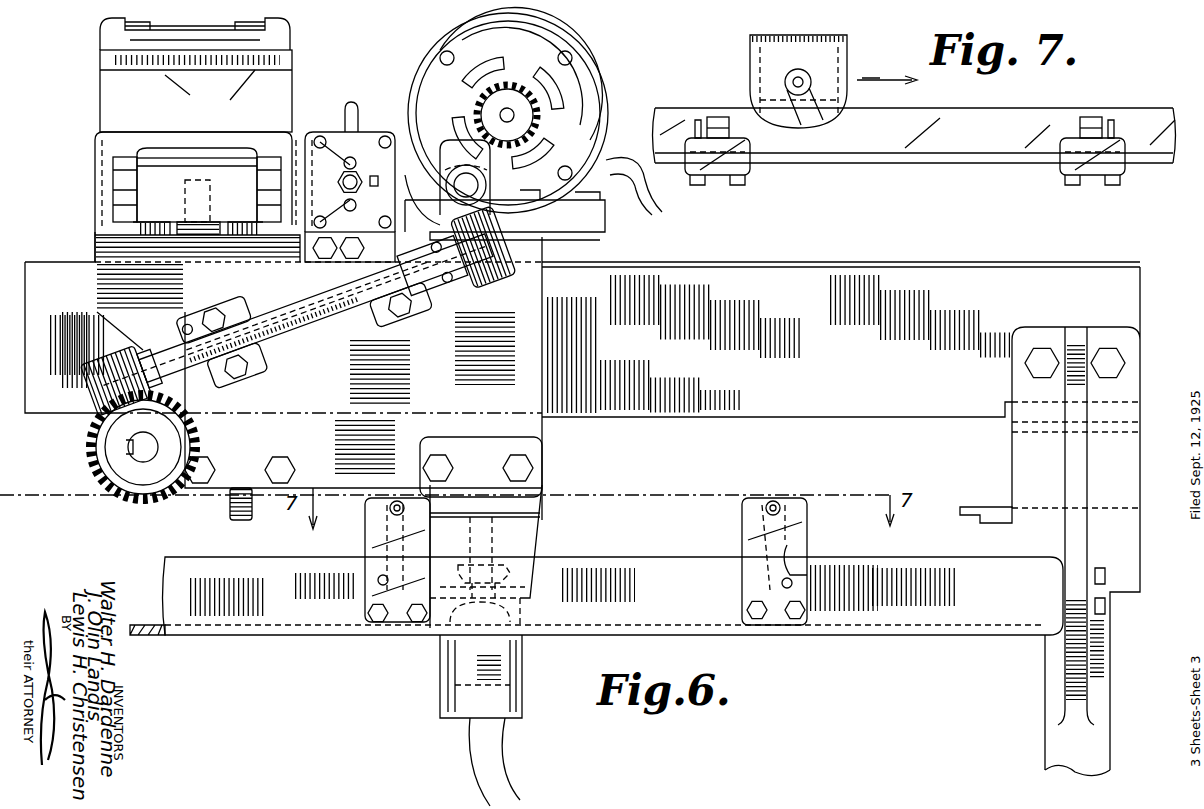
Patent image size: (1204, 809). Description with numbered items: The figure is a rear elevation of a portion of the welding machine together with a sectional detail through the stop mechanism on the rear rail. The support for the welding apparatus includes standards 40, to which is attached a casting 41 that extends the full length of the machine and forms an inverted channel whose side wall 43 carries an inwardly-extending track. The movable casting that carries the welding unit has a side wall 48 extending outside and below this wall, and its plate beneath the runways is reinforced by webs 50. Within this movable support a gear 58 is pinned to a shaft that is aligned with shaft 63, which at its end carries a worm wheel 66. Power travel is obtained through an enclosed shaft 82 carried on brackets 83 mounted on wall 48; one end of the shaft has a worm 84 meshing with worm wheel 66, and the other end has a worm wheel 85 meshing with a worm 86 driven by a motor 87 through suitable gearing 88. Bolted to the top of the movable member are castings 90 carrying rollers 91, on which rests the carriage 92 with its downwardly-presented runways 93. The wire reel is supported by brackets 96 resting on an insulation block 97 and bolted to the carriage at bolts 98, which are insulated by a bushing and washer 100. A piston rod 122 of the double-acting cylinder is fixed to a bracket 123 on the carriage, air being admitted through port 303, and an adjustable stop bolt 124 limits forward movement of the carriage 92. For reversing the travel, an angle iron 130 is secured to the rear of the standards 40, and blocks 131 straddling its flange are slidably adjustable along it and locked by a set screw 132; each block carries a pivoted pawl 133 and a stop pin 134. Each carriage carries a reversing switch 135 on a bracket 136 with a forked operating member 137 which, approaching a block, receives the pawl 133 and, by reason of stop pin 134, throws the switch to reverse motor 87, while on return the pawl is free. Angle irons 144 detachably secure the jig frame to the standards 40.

In FIG. 6, the standards 40 is at (1045, 705).
In FIG. 6, the casting 41 is at (60, 285).
In FIG. 6, the side wall 43 is at (935, 360).
In FIG. 6, the side wall 48 is at (202, 370).
In FIG. 6, the webs 50 is at (248, 520).
In FIG. 6, the gear 58 is at (100, 473).
In FIG. 6, the shaft 63 is at (143, 450).
In FIG. 6, the worm wheel 66 is at (95, 452).
In FIG. 6, the enclosed shaft 82 is at (305, 320).
In FIG. 6, the brackets 83 is at (240, 375).
In FIG. 6, the worm 84 is at (100, 392).
In FIG. 6, the worm wheel 85 is at (508, 280).
In FIG. 6, the worm 86 is at (447, 188).
In FIG. 6, the motor 87 is at (565, 92).
In FIG. 6, the gearing 88 is at (480, 110).
In FIG. 6, the castings 90 is at (197, 185).
In FIG. 6, the rollers 91 is at (122, 174).
In FIG. 6, the carriage 92 is at (270, 90).
In FIG. 6, the runways 93 is at (135, 155).
In FIG. 6, the brackets 96 is at (105, 35).
In FIG. 6, the insulation block 97 is at (108, 60).
In FIG. 6, the bolts 98 is at (195, 17).
In FIG. 6, the washer 100 is at (195, 42).
In FIG. 6, the piston rod 122 is at (350, 195).
In FIG. 6, the bracket 123 is at (305, 140).
In FIG. 6, the adjustable stop bolt 124 is at (328, 247).
In FIG. 6, the angle iron 130 is at (950, 637).
In FIG. 7, the angle iron 130 is at (975, 150).
In FIG. 6, the blocks 131 is at (365, 568).
In FIG. 7, the blocks 131 is at (752, 168).
In FIG. 6, the set screw 132 is at (415, 620).
In FIG. 7, the set screw 132 is at (740, 188).
In FIG. 6, the pivoted pawl 133 is at (375, 532).
In FIG. 7, the pivoted pawl 133 is at (1115, 92).
In FIG. 6, the stop pin 134 is at (378, 585).
In FIG. 7, the stop pin 134 is at (690, 115).
In FIG. 6, the reversing switch 135 is at (522, 660).
In FIG. 6, the bracket 136 is at (545, 535).
In FIG. 7, the bracket 136 is at (850, 33).
In FIG. 6, the forked operating member 137 is at (480, 565).
In FIG. 7, the forked operating member 137 is at (830, 105).
In FIG. 6, the angle irons 144 is at (985, 505).
In FIG. 6, the port 303 is at (352, 100).